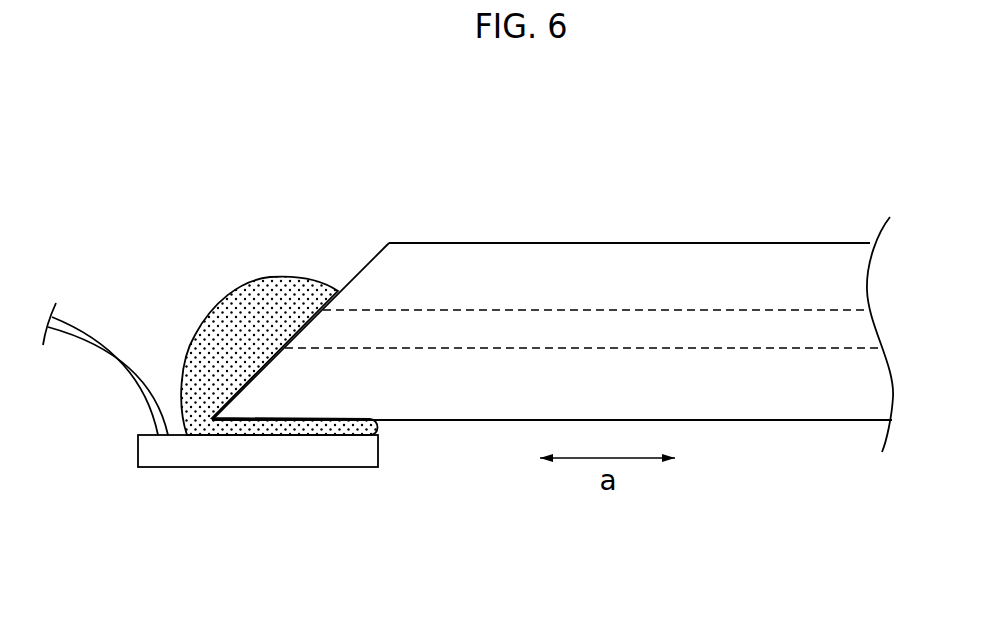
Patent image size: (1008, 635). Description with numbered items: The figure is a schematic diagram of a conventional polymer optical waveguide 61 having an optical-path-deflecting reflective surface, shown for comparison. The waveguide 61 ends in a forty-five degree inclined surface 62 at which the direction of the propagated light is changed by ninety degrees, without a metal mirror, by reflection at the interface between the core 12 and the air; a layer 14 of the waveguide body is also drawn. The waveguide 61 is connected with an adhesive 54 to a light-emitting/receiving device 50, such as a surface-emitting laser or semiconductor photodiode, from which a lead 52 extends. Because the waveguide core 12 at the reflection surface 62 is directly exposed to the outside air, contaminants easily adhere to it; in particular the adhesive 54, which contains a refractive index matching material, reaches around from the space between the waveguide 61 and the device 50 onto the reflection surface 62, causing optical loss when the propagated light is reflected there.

The core 12 is at (557, 323).
The reflective sheet 14 is at (723, 260).
The light-emitting/receiving device 50 is at (280, 467).
The lead wire 52 is at (92, 328).
The adhesive 54 is at (260, 283).
The polymer optical waveguide 61 is at (468, 201).
The inclined surface 62 is at (361, 259).